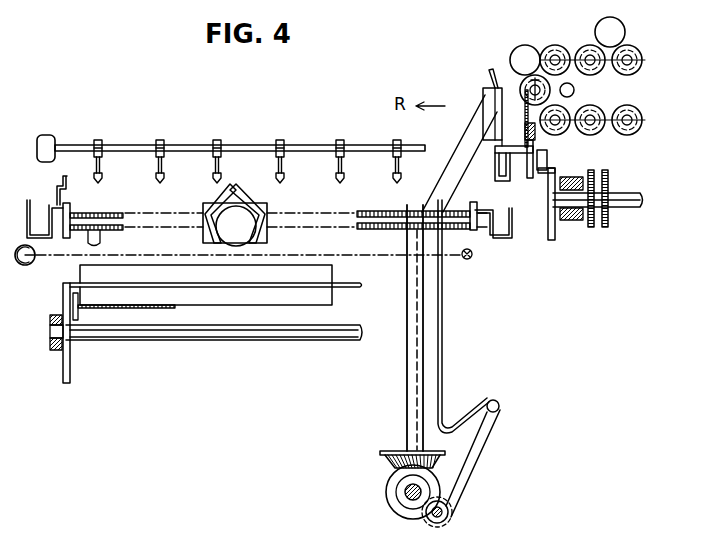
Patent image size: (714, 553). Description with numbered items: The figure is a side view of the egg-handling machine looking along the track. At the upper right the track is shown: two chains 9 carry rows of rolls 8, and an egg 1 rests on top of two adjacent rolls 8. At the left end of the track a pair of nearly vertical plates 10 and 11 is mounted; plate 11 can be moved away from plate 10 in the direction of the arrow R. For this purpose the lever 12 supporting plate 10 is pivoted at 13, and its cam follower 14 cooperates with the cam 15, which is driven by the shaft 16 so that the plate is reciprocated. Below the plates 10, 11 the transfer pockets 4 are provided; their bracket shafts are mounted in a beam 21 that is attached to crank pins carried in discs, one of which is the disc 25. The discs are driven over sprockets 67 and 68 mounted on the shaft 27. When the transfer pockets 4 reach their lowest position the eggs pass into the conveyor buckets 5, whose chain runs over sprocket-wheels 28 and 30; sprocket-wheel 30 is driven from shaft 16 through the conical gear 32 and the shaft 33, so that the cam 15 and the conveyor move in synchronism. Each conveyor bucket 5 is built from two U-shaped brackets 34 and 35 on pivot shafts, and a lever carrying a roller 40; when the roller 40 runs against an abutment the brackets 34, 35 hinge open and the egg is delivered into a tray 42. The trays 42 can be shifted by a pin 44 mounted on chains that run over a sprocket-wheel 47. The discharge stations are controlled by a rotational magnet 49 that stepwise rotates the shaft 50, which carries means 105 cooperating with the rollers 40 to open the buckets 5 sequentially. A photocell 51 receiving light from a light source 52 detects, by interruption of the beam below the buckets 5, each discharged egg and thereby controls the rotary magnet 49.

The egg 1 is at (240, 210).
The transfer pocket 4 is at (508, 180).
The conveyor bucket 5 is at (39, 212).
The roll 8 is at (556, 45).
The chain 9 is at (646, 118).
The plate 10 is at (495, 110).
The plate 11 is at (492, 72).
The lever 12 is at (443, 320).
The pivot 13 is at (496, 401).
The cam follower 14 is at (449, 513).
The cam 15 is at (386, 494).
The shaft 16 is at (413, 502).
The beam 21 is at (547, 147).
The disc 25 is at (552, 242).
The shaft 27 is at (637, 210).
The sprocket-wheel 28 is at (121, 212).
The sprocket-wheel 30 is at (367, 210).
The conical gear 32 is at (382, 452).
The shaft 33 is at (406, 372).
The U-shaped bracket 34 is at (212, 228).
The U-shaped bracket 35 is at (262, 228).
The roller 40 is at (64, 186).
The tray 42 is at (335, 268).
The pin 44 is at (362, 286).
The sprocket-wheel 47 is at (70, 383).
The rotational magnet 49 is at (47, 134).
The shaft 50 is at (136, 145).
The photocell 51 is at (26, 266).
The light source 52 is at (470, 259).
The sprocket 67 is at (591, 229).
The sprocket 68 is at (606, 229).
The means for opening buckets 105 is at (216, 141).